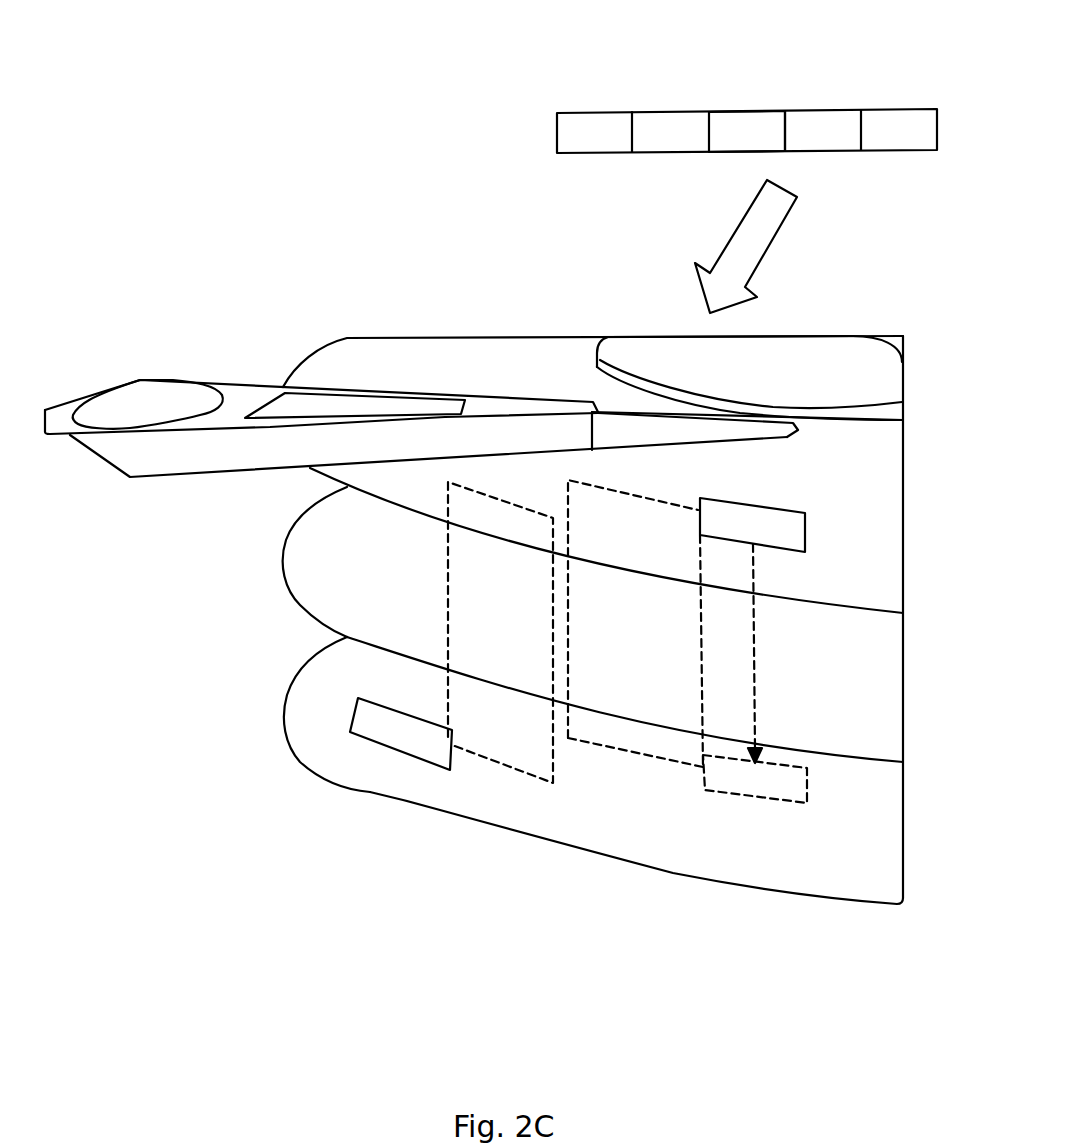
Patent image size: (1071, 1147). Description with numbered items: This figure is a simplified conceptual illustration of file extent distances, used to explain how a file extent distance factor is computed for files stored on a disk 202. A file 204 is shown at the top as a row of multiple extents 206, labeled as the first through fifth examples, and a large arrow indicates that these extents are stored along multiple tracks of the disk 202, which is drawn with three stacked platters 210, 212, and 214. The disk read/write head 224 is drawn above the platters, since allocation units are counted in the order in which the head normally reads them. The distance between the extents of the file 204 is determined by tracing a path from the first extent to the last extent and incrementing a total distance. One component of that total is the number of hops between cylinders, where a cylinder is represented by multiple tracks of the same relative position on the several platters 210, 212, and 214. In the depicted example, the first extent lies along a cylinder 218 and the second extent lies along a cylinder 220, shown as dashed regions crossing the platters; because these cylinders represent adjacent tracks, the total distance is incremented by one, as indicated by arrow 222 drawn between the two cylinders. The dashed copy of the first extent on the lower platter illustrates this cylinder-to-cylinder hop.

The disk 202 is at (242, 267).
The file 204 is at (699, 77).
The extents 206 is at (745, 112).
The platter 210 is at (891, 546).
The platter 212 is at (891, 694).
The platter 214 is at (893, 854).
The cylinder 218 is at (703, 767).
The cylinder 220 is at (498, 772).
The arrow 222 is at (595, 750).
The disk read/write head 224 is at (230, 463).